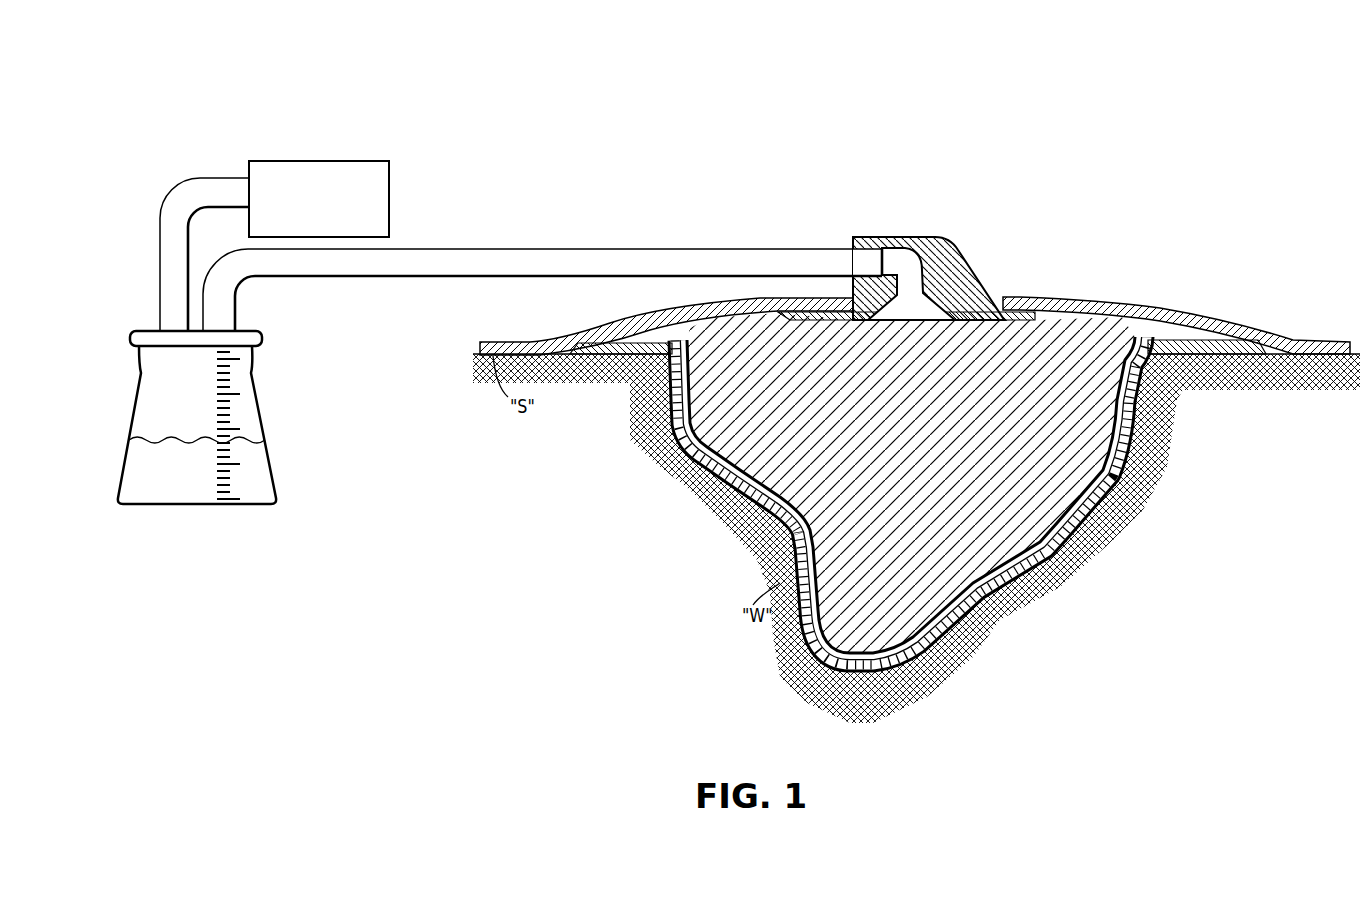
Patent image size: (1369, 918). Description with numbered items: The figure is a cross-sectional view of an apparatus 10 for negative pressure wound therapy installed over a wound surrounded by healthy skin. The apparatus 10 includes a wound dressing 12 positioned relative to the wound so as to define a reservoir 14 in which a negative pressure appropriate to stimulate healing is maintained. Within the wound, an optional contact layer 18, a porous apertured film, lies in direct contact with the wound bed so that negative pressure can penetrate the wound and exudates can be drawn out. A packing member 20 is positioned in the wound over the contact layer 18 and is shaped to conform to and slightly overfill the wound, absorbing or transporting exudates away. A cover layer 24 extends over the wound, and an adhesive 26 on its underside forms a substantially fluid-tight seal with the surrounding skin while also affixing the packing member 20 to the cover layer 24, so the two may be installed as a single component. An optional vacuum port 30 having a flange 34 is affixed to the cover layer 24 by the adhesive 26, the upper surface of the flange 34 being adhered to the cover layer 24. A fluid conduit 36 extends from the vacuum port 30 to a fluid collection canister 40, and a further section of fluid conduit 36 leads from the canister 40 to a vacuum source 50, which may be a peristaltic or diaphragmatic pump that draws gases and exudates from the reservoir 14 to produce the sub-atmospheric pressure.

The apparatus 10 is at (545, 131).
The wound dressing 12 is at (1030, 219).
The reservoir 14 is at (1138, 327).
The contact layer 18 is at (1130, 440).
The packing member 20 is at (930, 520).
The cover layer 24 is at (1062, 297).
The adhesive 26 is at (522, 353).
The vacuum port 30 is at (902, 237).
The flange 34 is at (1017, 315).
The fluid conduit 36 is at (215, 177).
The fluid collection canister 40 is at (258, 331).
The vacuum source 50 is at (338, 160).